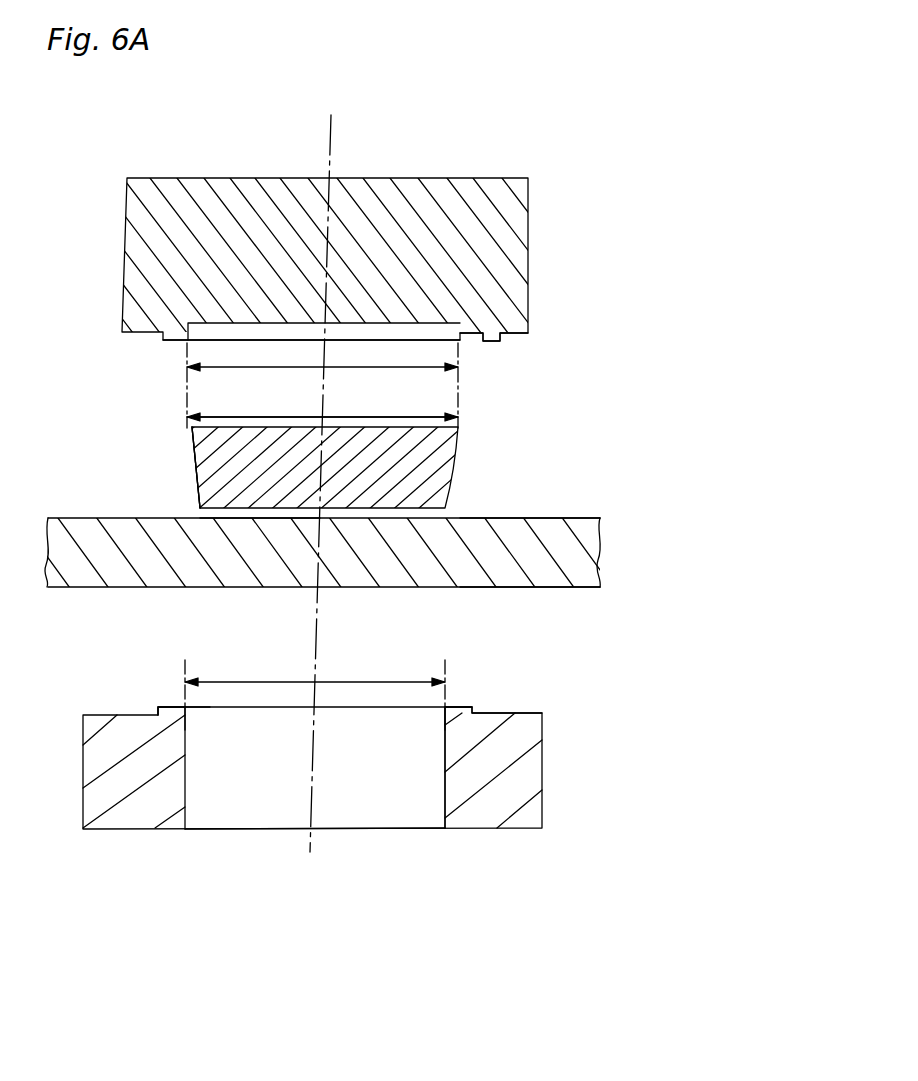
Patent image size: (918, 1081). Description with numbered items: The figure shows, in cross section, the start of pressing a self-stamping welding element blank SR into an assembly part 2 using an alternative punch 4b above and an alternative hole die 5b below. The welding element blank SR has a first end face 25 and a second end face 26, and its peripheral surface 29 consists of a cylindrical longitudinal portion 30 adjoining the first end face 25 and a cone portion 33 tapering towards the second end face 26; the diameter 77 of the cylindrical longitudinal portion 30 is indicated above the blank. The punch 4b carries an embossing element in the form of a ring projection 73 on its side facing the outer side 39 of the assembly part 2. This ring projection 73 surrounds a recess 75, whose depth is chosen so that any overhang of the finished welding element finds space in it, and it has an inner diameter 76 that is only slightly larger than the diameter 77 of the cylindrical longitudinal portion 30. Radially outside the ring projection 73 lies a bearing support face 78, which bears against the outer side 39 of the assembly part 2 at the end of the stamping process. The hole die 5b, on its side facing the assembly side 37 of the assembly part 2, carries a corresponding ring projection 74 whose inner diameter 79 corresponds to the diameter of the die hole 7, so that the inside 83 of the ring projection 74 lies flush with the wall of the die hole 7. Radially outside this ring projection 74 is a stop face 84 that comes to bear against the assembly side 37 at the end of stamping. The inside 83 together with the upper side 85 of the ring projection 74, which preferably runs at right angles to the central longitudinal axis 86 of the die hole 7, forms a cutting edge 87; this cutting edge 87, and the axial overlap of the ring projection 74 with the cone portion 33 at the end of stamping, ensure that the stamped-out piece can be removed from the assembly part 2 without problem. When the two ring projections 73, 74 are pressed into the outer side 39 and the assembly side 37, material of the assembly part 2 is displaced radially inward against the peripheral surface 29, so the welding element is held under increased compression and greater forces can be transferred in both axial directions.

The punch 4b is at (512, 218).
The recess 75 is at (224, 329).
The bearing support face 78 is at (505, 340).
The ring projection 73 is at (468, 338).
The inner diameter 76 is at (377, 367).
The diameter 77 is at (403, 418).
The first end face 25 is at (263, 423).
The peripheral surface 29 is at (455, 470).
The welding element blank SR is at (442, 457).
The cylindrical longitudinal portion 30 is at (190, 440).
The cone portion 33 is at (192, 485).
The second end face 26 is at (222, 538).
The outer side 39 is at (542, 517).
The assembly part 2 is at (575, 562).
The assembly side 37 is at (533, 587).
The hole die 5b is at (523, 773).
The upper side 85 is at (175, 708).
The ring projection 74 is at (170, 712).
The inner diameter 79 is at (242, 682).
The cutting edge 87 is at (185, 707).
The inside 83 is at (446, 704).
The stop face 84 is at (508, 713).
The central longitudinal axis 86 is at (306, 812).
The die hole 7 is at (445, 780).